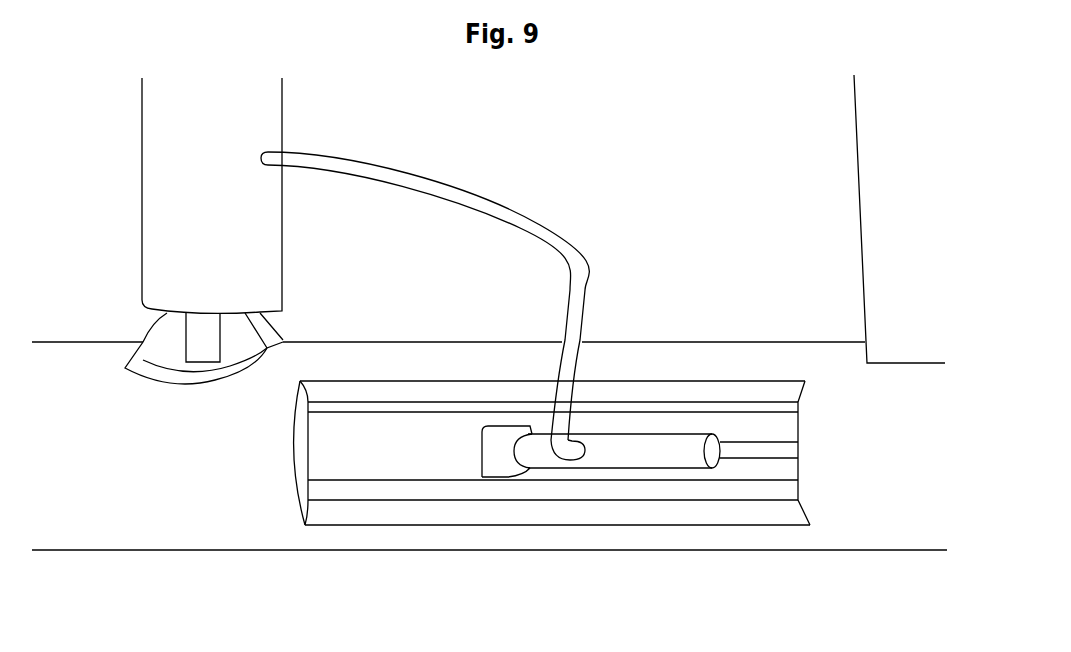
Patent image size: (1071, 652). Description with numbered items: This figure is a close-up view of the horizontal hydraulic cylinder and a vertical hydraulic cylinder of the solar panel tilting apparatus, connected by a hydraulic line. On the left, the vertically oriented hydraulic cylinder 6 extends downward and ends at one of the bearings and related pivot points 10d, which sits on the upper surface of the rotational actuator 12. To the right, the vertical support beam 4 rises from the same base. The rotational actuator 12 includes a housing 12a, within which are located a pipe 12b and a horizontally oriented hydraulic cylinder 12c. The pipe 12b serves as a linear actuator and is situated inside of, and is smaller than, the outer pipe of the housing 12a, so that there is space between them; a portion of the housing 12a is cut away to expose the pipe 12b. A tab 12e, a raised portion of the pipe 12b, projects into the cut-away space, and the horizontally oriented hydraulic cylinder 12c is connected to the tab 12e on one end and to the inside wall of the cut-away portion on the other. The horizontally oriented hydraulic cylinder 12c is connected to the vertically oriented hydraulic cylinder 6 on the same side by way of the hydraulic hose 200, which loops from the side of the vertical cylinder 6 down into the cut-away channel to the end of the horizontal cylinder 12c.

The vertical support beam 4 is at (895, 200).
The vertically oriented hydraulic cylinder 6 is at (157, 240).
The bearing and pivot point 10d is at (240, 335).
The rotational actuator 12 is at (847, 555).
The housing 12a is at (143, 488).
The pipe (linear actuator) 12b is at (412, 442).
The horizontally oriented hydraulic cylinder 12c is at (687, 450).
The tab 12e is at (493, 452).
The hydraulic hose 200 is at (515, 200).